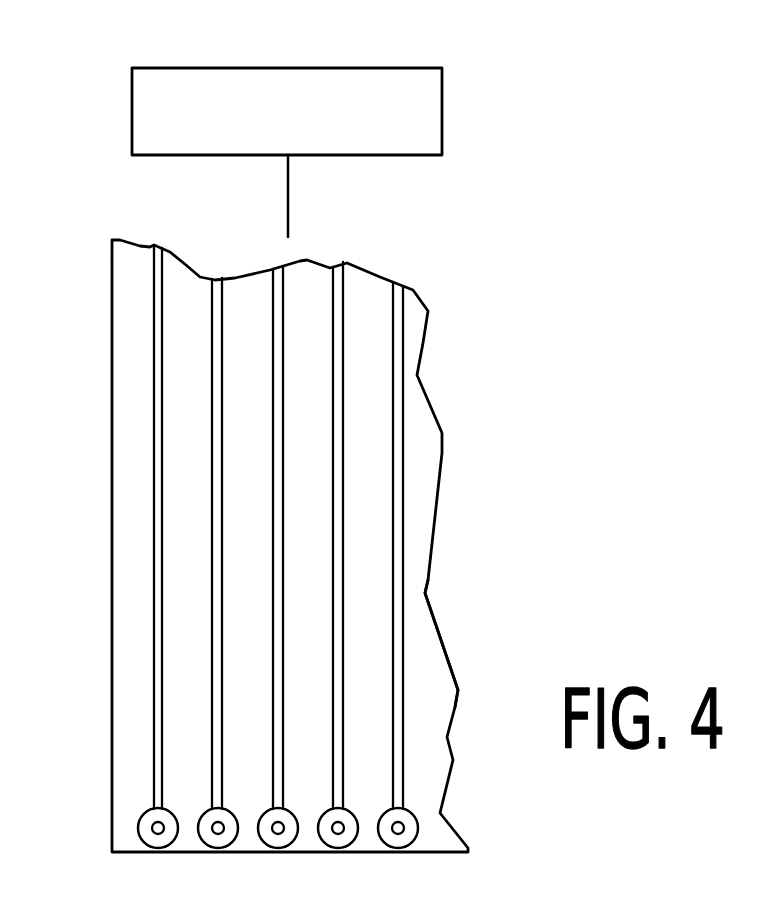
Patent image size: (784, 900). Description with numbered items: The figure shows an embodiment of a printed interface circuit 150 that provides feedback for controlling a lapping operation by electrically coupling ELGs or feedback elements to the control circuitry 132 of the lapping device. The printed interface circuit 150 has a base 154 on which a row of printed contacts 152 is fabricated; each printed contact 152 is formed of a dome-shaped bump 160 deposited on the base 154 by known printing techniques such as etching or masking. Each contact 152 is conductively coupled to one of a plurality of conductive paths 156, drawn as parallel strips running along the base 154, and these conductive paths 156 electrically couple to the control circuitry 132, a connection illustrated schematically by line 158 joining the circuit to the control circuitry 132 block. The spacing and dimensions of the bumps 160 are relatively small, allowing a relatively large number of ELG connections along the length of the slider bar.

The control circuitry 132 is at (176, 65).
The printed interface circuit 150 is at (455, 465).
The printed contact 152 is at (147, 834).
The base 154 is at (430, 670).
The conductive path 156 is at (156, 506).
The line 158 is at (288, 193).
The dome-shaped bump 160 is at (152, 822).